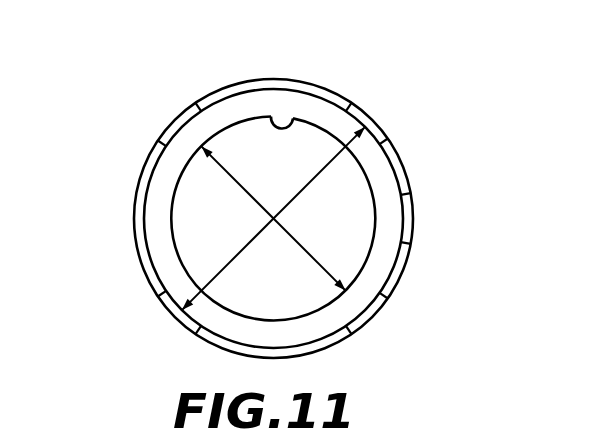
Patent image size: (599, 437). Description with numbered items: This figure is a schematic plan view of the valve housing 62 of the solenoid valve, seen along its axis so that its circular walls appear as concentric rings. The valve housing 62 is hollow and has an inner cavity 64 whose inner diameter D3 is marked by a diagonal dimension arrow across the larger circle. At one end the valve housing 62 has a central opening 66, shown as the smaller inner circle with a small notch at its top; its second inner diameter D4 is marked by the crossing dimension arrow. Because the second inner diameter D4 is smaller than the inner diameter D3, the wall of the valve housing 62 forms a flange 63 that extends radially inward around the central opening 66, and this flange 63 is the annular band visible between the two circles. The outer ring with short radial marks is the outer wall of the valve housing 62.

The valve housing 62 is at (134, 220).
The flange 63 is at (387, 178).
The inner cavity 64 is at (340, 238).
The central opening 66 is at (295, 123).
The inner diameter D3 is at (315, 181).
The second inner diameter D4 is at (237, 181).